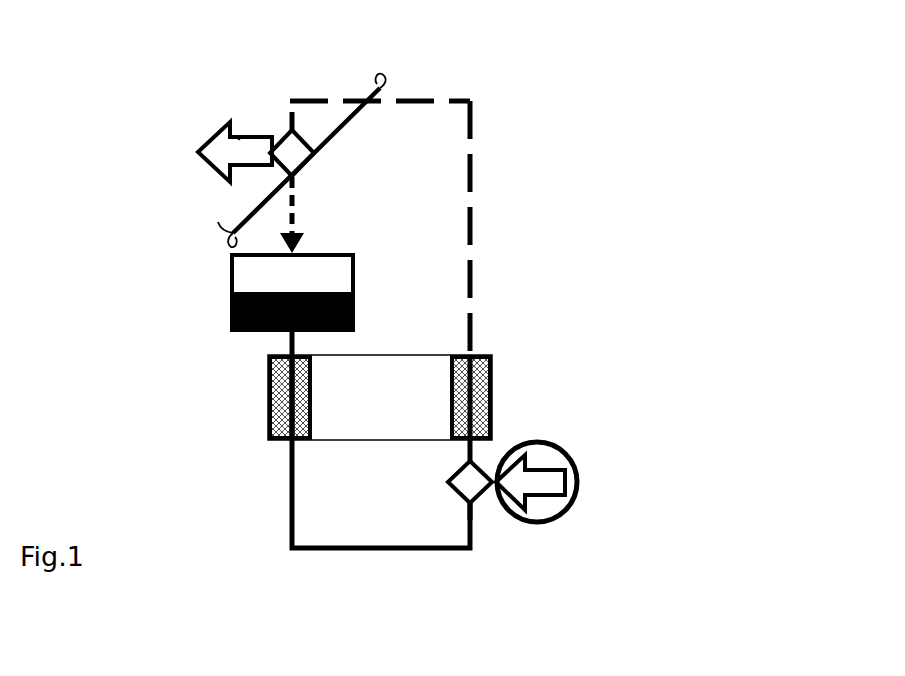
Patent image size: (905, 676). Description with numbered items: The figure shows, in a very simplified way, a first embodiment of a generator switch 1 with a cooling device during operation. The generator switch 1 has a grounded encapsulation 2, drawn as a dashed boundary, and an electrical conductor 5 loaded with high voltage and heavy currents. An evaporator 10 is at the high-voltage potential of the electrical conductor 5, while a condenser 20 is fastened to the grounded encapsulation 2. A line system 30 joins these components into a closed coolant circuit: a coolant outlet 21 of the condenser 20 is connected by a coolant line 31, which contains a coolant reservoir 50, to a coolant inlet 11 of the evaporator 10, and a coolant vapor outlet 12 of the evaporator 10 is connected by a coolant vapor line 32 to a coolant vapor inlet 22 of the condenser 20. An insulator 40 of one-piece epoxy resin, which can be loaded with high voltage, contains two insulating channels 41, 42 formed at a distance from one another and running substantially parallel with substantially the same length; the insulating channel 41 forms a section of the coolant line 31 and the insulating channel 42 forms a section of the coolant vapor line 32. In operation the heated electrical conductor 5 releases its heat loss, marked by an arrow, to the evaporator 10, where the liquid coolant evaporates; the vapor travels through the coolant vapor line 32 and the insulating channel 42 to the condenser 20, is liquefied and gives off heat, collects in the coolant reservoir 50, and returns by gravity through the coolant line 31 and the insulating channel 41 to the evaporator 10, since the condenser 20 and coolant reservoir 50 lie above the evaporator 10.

The generator switch 1 is at (497, 93).
The encapsulation 2 is at (369, 88).
The electrical conductor 5 is at (563, 528).
The evaporator 10 is at (471, 483).
The coolant inlet 11 is at (469, 504).
The coolant vapor outlet 12 is at (462, 462).
The condenser 20 is at (290, 152).
The coolant outlet 21 is at (287, 172).
The coolant vapor inlet 22 is at (289, 152).
The line system 30 is at (462, 197).
The coolant line 31 is at (278, 240).
The coolant vapor line 32 is at (473, 222).
The insulator 40 is at (364, 411).
The insulating channel 41 is at (268, 391).
The insulating channel 42 is at (493, 382).
The coolant reservoir 50 is at (292, 282).